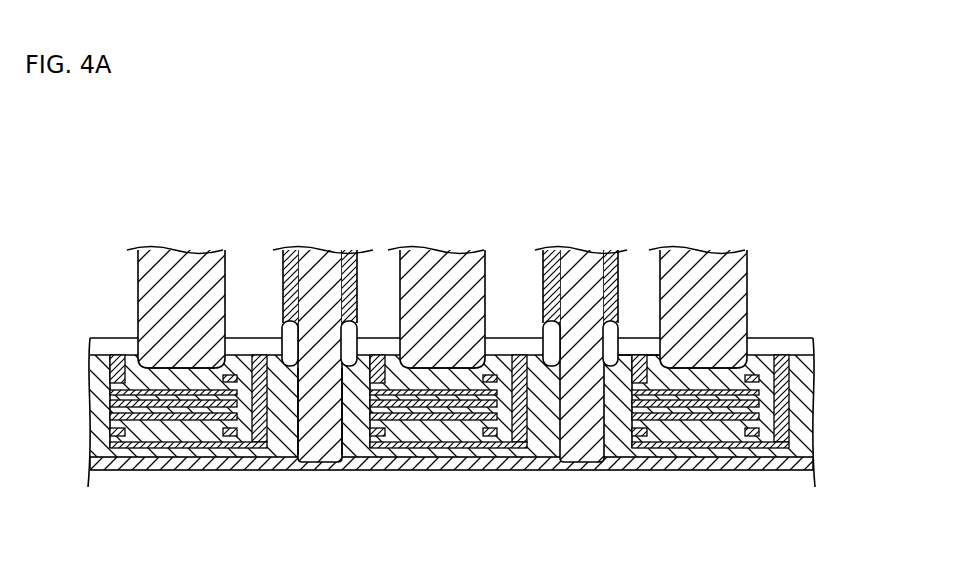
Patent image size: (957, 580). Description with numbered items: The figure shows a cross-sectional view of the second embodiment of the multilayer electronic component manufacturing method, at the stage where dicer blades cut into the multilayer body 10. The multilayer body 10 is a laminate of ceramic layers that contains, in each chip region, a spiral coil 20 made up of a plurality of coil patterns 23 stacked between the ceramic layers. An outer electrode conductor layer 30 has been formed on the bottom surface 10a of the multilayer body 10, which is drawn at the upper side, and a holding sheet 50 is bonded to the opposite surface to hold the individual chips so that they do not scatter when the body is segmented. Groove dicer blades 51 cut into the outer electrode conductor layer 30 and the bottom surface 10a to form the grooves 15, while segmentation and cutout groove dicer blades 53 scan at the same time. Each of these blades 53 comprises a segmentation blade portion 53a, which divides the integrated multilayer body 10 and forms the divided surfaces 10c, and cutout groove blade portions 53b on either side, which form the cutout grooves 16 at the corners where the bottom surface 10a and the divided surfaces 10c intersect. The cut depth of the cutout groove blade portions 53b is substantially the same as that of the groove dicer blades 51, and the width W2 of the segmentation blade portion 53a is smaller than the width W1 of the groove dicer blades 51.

The multilayer body 10 is at (277, 446).
The bottom surface 10a is at (622, 355).
The divided surface 10c is at (298, 398).
The groove 15 is at (200, 367).
The cutout groove 16 is at (283, 330).
The coil 20 is at (185, 458).
The coil pattern 23 is at (167, 405).
The outer electrode conductor layer 30 is at (797, 343).
The holding sheet 50 is at (803, 464).
The groove dicer blade 51 is at (157, 266).
The segmentation and cutout groove dicer blade 53 is at (431, 320).
The segmentation blade portion 53a is at (332, 258).
The cutout groove blade portion 53b is at (283, 267).
The width of groove dicer blade W1 is at (217, 221).
The width of segmentation blade portion W2 is at (334, 172).